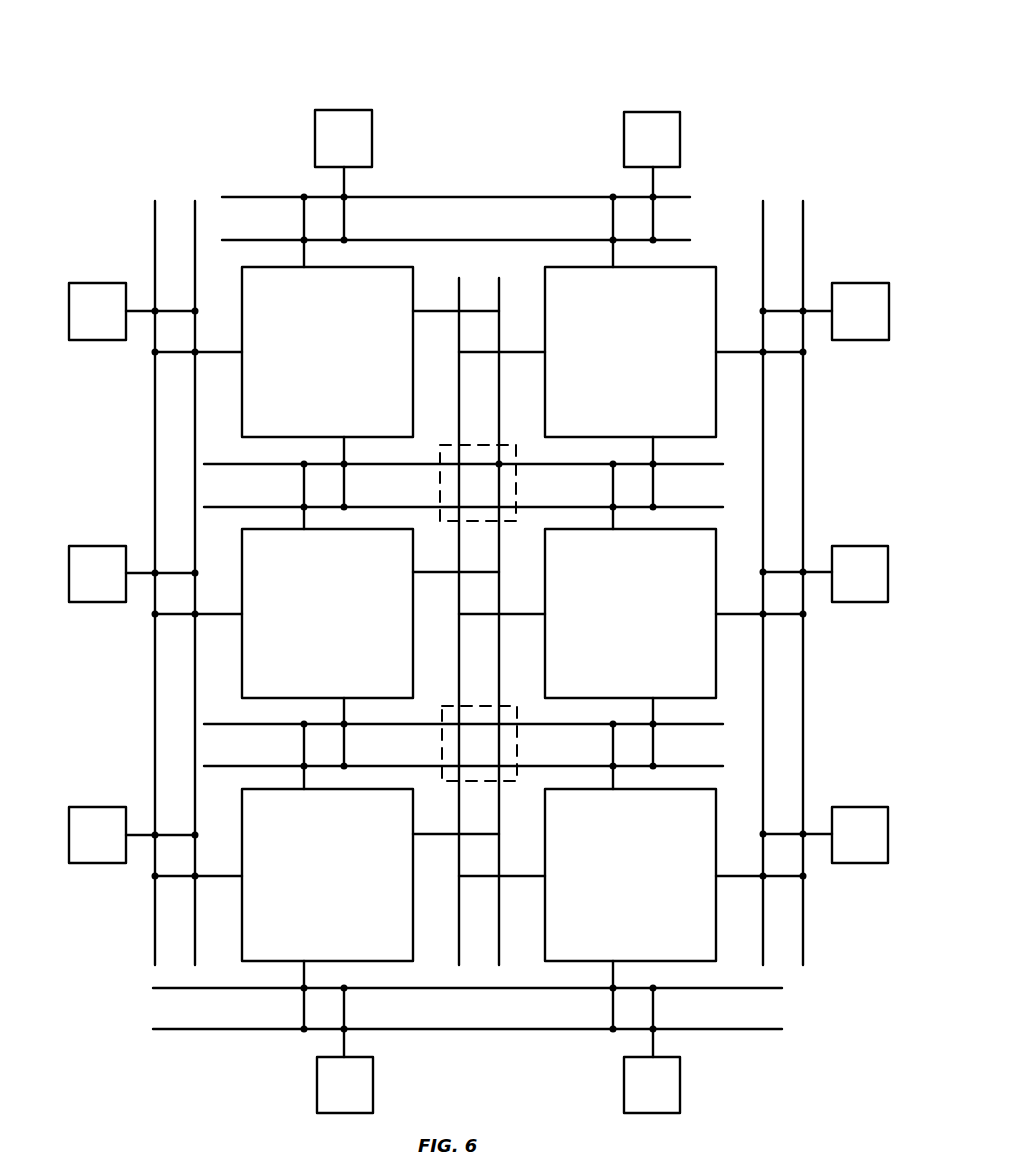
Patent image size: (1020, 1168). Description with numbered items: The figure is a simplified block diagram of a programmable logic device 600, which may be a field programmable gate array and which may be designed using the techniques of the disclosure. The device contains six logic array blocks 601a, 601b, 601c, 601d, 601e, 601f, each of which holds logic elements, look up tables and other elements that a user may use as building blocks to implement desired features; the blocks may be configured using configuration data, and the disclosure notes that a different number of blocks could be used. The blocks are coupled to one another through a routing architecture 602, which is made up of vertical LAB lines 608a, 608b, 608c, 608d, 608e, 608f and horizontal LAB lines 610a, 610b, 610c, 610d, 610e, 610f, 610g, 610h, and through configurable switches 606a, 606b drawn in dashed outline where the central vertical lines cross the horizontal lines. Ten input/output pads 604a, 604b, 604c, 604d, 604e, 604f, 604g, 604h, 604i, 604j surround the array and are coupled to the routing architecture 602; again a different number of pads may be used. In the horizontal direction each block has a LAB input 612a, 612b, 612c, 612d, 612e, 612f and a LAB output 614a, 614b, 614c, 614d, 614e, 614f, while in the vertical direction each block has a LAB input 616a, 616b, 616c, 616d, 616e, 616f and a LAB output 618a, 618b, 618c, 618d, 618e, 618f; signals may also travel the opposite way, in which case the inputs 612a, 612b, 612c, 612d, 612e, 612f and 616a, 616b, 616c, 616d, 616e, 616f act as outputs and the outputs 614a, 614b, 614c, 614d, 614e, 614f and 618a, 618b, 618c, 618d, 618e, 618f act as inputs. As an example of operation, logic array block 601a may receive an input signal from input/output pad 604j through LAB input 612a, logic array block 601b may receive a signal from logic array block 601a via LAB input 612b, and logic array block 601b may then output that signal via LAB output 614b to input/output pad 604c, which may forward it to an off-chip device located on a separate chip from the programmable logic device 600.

The programmable logic device 600 is at (753, 58).
The routing architecture 602 is at (126, 488).
The logic array block 601a is at (303, 363).
The logic array block 601b is at (606, 363).
The logic array block 601c is at (303, 625).
The logic array block 601d is at (606, 625).
The logic array block 601e is at (303, 887).
The logic array block 601f is at (608, 887).
The input/output pad 604a is at (337, 110).
The input/output pad 604b is at (646, 112).
The input/output pad 604c is at (858, 283).
The input/output pad 604d is at (858, 546).
The input/output pad 604e is at (858, 807).
The input/output pad 604f is at (681, 1080).
The input/output pad 604g is at (373, 1083).
The input/output pad 604h is at (92, 863).
The input/output pad 604i is at (92, 602).
The input/output pad 604j is at (92, 340).
The switch 606a is at (517, 485).
The switch 606b is at (518, 742).
The vertical LAB line 608a is at (155, 215).
The vertical LAB line 608b is at (195, 201).
The vertical LAB line 608c is at (459, 296).
The vertical LAB line 608d is at (500, 340).
The vertical LAB line 608e is at (763, 232).
The vertical LAB line 608f is at (803, 252).
The horizontal LAB line 610a is at (690, 197).
The horizontal LAB line 610b is at (690, 240).
The horizontal LAB line 610c is at (700, 464).
The horizontal LAB line 610d is at (700, 507).
The horizontal LAB line 610e is at (700, 724).
The horizontal LAB line 610f is at (700, 766).
The horizontal LAB line 610g is at (700, 988).
The horizontal LAB line 610h is at (700, 1029).
The LAB input 612a is at (227, 353).
The LAB input 612b is at (518, 353).
The LAB input 612c is at (227, 615).
The LAB input 612d is at (518, 615).
The LAB input 612e is at (217, 877).
The LAB input 612f is at (518, 877).
The LAB output 614a is at (422, 312).
The LAB output 614b is at (732, 354).
The LAB output 614c is at (422, 573).
The LAB output 614d is at (732, 616).
The LAB output 614e is at (422, 835).
The LAB output 614f is at (732, 878).
The LAB input 616a is at (304, 261).
The LAB input 616b is at (613, 261).
The LAB input 616c is at (304, 524).
The LAB input 616d is at (613, 524).
The LAB input 616e is at (304, 786).
The LAB input 616f is at (613, 786).
The LAB output 618a is at (344, 452).
The LAB output 618b is at (653, 452).
The LAB output 618c is at (344, 712).
The LAB output 618d is at (653, 712).
The LAB output 618e is at (304, 976).
The LAB output 618f is at (613, 976).